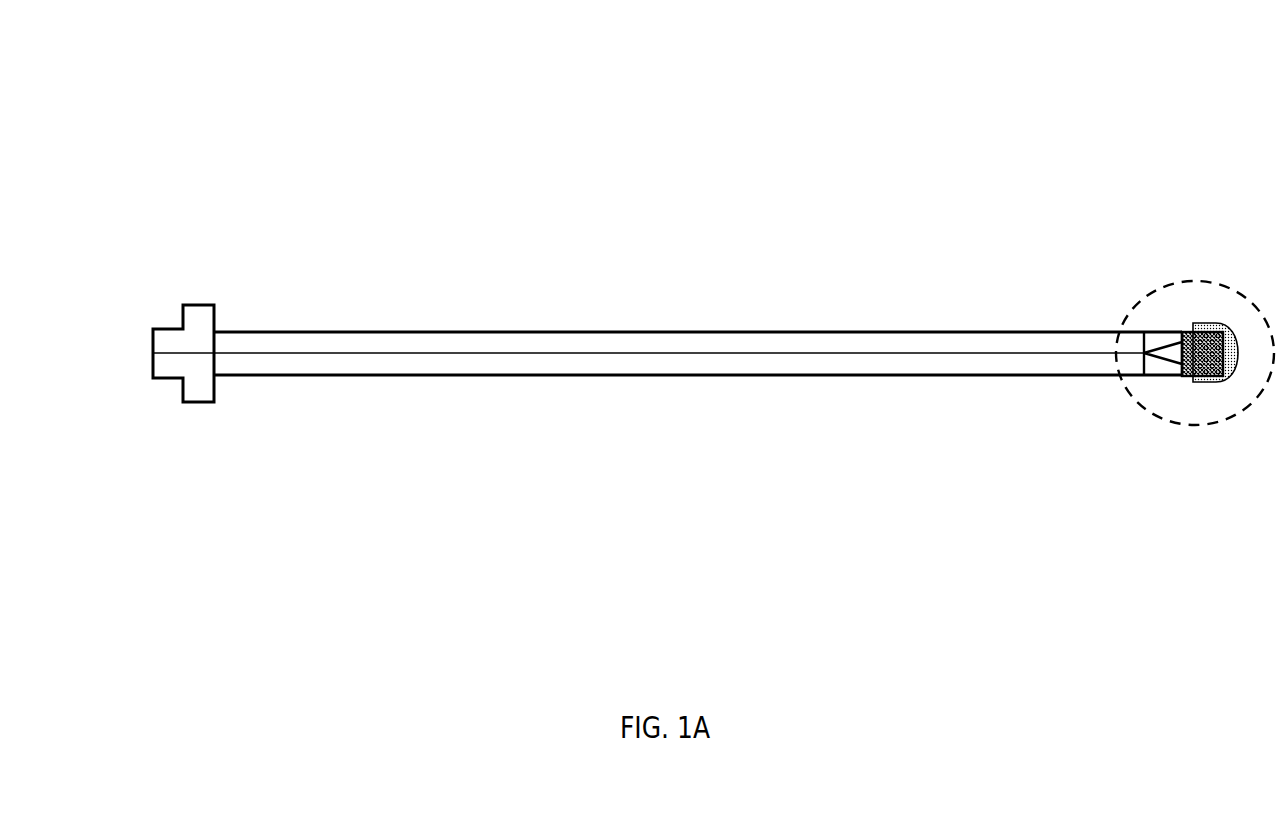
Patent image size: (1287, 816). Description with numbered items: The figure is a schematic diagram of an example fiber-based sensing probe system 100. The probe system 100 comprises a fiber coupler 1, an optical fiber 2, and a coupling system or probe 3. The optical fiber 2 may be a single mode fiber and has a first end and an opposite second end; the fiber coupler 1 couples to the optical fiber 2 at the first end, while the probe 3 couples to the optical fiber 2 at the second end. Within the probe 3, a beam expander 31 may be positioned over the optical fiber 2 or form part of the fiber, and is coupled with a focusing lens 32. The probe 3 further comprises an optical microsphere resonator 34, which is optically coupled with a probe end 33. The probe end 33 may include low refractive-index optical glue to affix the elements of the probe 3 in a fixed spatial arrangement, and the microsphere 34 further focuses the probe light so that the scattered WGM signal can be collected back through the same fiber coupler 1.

The probe system 100 is at (250, 168).
The fiber coupler 1 is at (213, 305).
The optical fiber 2 is at (635, 330).
The probe 3 is at (1125, 313).
The beam expander 31 is at (1163, 331).
The focusing lens 32 is at (1197, 330).
The probe end 33 is at (1212, 383).
The microsphere 34 is at (1231, 358).